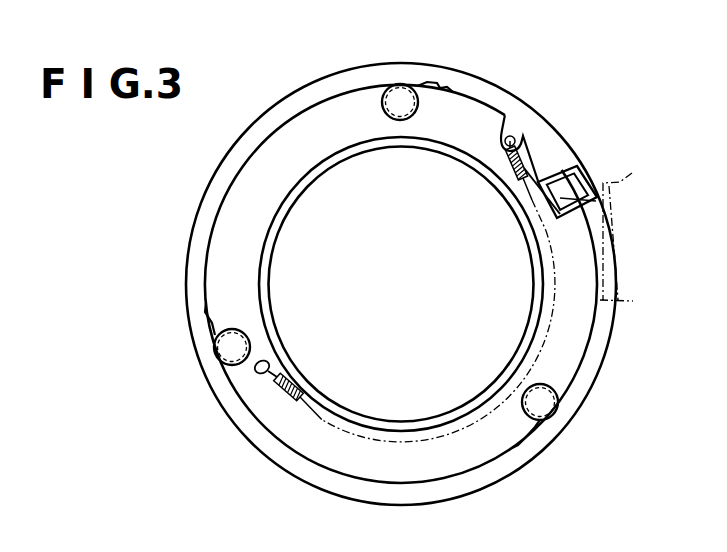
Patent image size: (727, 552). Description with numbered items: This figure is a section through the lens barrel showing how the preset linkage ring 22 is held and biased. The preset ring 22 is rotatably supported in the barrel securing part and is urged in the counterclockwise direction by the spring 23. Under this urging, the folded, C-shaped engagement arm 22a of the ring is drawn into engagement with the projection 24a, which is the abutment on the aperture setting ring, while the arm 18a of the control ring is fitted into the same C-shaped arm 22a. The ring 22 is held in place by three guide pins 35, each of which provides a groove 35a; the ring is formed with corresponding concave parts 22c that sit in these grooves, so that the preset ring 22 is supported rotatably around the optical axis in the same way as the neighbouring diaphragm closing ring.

The preset linkage ring 22 is at (483, 97).
The engagement arm 22a is at (575, 166).
The concave parts 22c is at (440, 86).
The spring 23 is at (282, 395).
The projection 24a is at (632, 173).
The arm 18a is at (596, 201).
The guide pins 35 is at (402, 97).
The groove 35a is at (387, 88).